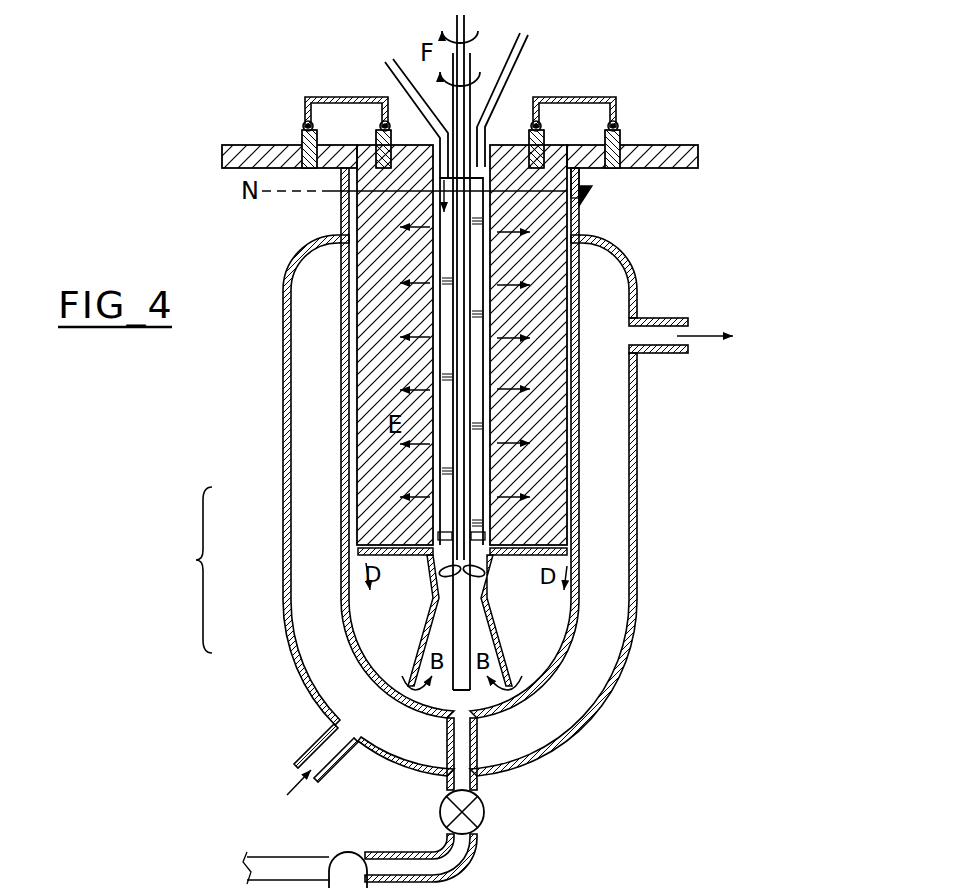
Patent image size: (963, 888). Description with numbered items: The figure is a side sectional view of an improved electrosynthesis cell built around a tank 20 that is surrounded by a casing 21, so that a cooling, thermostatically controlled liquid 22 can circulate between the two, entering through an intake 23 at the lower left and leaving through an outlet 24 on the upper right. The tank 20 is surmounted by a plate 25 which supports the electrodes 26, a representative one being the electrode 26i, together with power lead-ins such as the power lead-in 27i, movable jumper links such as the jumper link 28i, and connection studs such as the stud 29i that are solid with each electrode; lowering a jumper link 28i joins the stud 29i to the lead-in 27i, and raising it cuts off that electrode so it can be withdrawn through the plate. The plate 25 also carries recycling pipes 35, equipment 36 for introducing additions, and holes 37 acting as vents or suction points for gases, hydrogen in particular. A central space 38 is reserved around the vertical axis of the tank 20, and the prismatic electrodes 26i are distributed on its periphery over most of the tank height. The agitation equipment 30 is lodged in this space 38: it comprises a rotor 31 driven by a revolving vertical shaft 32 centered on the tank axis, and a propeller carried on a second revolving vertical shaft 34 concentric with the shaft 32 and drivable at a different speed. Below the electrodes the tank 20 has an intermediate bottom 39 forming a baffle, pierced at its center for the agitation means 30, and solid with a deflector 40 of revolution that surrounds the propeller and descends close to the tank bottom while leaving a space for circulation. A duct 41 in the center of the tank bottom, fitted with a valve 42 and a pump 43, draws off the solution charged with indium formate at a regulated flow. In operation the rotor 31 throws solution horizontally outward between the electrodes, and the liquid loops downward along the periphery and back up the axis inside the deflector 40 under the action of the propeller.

The tank 20 is at (578, 412).
The casing 21 is at (637, 497).
The cooling liquid 22 is at (613, 580).
The intake 23 is at (312, 758).
The outlet 24 is at (678, 318).
The plate 25 is at (683, 143).
The electrode 26 is at (464, 861).
The electrode 26i is at (572, 196).
The power lead-in 27i is at (612, 166).
The jumper link 28i is at (600, 98).
The stud 29i is at (574, 198).
The agitation equipment 30 is at (447, 577).
The rotor 31 is at (452, 513).
The revolving vertical shaft 32 is at (455, 470).
The revolving vertical shaft 34 is at (462, 618).
The recycling pipes 35 is at (522, 52).
The equipment for introduction of additions 36 is at (383, 68).
The holes 37 is at (354, 148).
The space 38 is at (437, 363).
The intermediate bottom 39 is at (532, 557).
The deflector 40 is at (503, 645).
The duct 41 is at (477, 742).
The valve 42 is at (487, 814).
The pump 43 is at (340, 872).